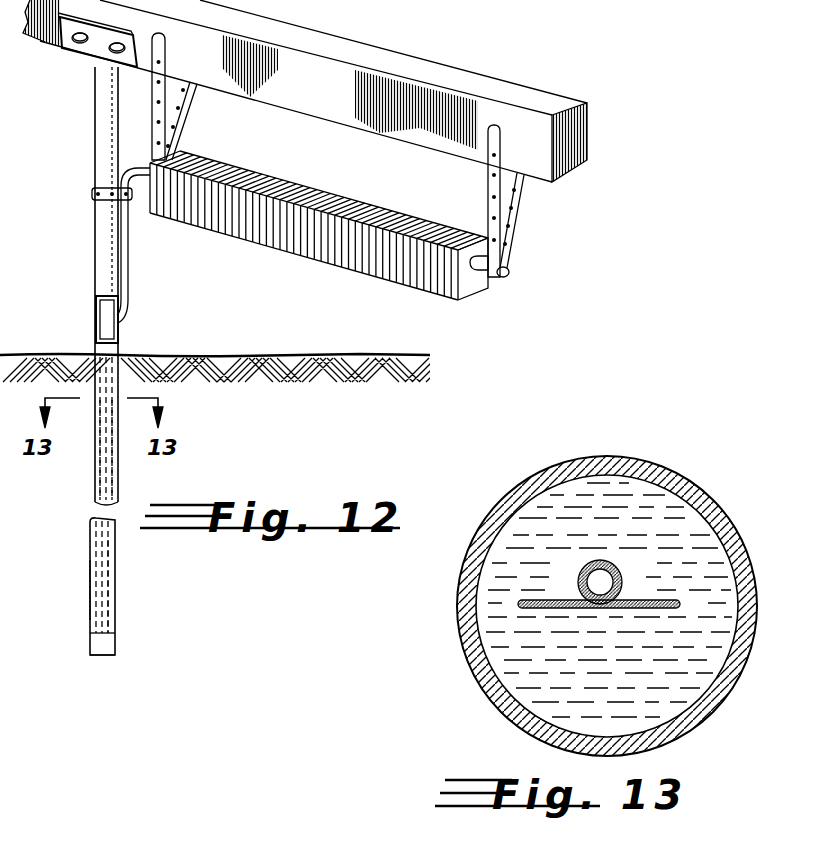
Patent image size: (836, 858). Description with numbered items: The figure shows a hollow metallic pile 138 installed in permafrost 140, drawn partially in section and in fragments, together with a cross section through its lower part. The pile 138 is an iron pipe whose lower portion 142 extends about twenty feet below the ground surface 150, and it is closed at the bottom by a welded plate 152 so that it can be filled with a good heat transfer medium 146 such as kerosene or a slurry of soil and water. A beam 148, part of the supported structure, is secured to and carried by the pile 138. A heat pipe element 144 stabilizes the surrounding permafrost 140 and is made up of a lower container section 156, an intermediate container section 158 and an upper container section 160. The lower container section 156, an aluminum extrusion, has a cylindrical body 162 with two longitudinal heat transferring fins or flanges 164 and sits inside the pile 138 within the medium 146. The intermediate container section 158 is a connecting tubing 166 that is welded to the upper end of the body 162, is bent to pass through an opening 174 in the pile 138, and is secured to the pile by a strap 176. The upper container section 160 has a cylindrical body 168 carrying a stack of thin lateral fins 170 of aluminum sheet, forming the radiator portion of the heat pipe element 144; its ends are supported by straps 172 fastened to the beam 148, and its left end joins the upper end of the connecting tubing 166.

In FIG. 12, the hollow metallic pile 138 is at (95, 134).
In FIG. 13, the hollow metallic pile 138 is at (707, 496).
In FIG. 12, the permafrost 140 is at (78, 521).
In FIG. 12, the lower portion 142 is at (92, 462).
In FIG. 12, the heat pipe element 144 is at (114, 470).
In FIG. 12, the heat transfer medium 146 is at (105, 643).
In FIG. 13, the heat transfer medium 146 is at (697, 671).
In FIG. 12, the beam 148 is at (556, 97).
In FIG. 12, the ground surface 150 is at (68, 353).
In FIG. 12, the welded plate 152 is at (110, 657).
In FIG. 12, the lower container section 156 is at (112, 548).
In FIG. 13, the lower container section 156 is at (594, 610).
In FIG. 12, the intermediate container section 158 is at (128, 266).
In FIG. 12, the upper container section 160 is at (480, 274).
In FIG. 12, the cylindrical body 162 is at (108, 588).
In FIG. 13, the cylindrical body 162 is at (590, 563).
In FIG. 12, the fins or flanges 164 is at (93, 574).
In FIG. 13, the fins or flanges 164 is at (670, 598).
In FIG. 12, the connecting tubing 166 is at (126, 313).
In FIG. 12, the cylindrical body 168 is at (509, 271).
In FIG. 12, the fins 170 is at (335, 268).
In FIG. 12, the straps 172 is at (185, 105).
In FIG. 12, the opening 174 is at (104, 308).
In FIG. 12, the strap 176 is at (92, 197).